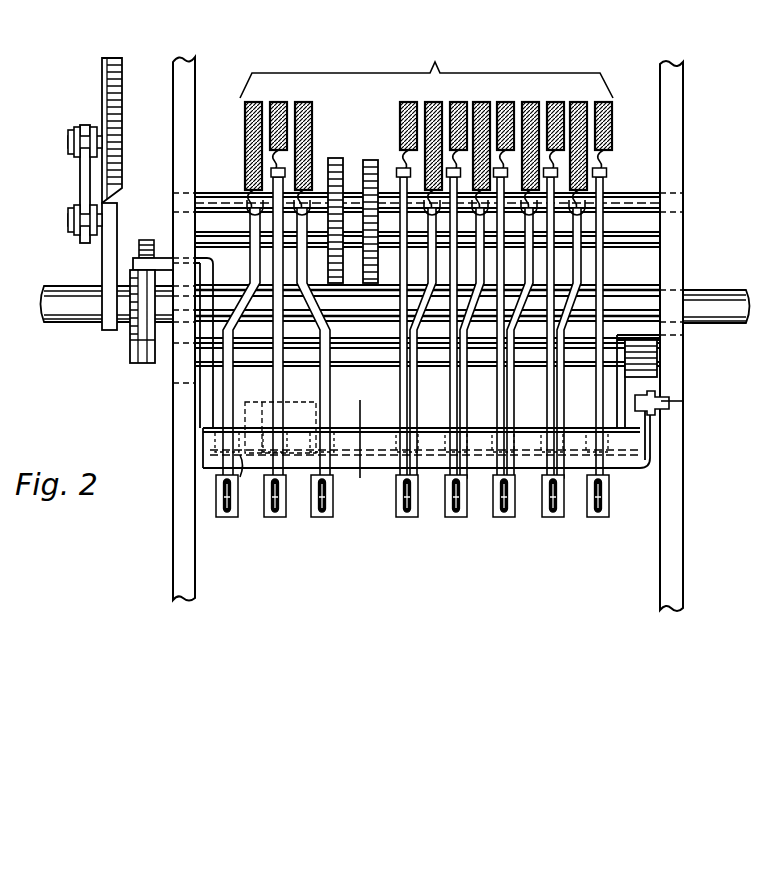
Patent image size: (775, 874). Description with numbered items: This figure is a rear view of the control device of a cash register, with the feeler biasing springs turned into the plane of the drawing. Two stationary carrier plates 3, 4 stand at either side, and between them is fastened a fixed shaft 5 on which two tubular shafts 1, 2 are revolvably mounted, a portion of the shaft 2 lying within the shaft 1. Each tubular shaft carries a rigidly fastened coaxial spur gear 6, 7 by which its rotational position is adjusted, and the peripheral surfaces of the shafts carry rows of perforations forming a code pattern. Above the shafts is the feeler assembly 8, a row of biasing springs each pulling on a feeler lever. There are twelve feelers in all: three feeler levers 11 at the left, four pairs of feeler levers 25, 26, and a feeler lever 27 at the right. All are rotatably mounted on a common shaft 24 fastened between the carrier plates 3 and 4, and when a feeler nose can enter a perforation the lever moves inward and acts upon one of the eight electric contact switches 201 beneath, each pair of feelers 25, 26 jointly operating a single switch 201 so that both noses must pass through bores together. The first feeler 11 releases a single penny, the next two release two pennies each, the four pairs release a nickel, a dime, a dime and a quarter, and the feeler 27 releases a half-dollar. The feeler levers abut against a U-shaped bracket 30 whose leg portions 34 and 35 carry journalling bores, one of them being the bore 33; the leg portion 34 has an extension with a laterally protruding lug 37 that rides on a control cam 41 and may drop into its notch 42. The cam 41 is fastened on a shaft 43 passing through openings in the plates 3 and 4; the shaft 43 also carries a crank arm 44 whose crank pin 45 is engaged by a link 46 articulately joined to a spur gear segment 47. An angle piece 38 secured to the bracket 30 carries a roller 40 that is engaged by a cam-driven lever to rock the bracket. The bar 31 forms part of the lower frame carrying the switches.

The tubular shaft 1 is at (400, 190).
The tubular shaft 2 is at (317, 198).
The carrier plate 3 is at (200, 78).
The carrier plate 4 is at (680, 560).
The fixed shaft 5 is at (663, 212).
The spur gear 6 is at (373, 158).
The spur gear 7 is at (338, 158).
The feeler assembly 8 is at (442, 53).
The feeler lever 11 is at (342, 386).
The shaft 24 is at (660, 349).
The feeler lever 25 is at (418, 470).
The feeler lever 26 is at (568, 420).
The feeler lever 27 is at (600, 396).
The bracket 30 is at (387, 401).
The bar 31 is at (362, 451).
The journalling bore 33 is at (647, 378).
The leg portion 34 is at (200, 385).
The leg portion 35 is at (625, 420).
The lug 37 is at (165, 252).
The angle piece 38 is at (312, 452).
The roller 40 is at (255, 478).
The control cam 41 is at (135, 357).
The notch 42 is at (136, 243).
The shaft 43 is at (70, 322).
The crank arm 44 is at (100, 270).
The crank pin 45 is at (68, 222).
The link 46 is at (80, 178).
The spur gear segment 47 is at (103, 80).
The electric contact switch 201 is at (604, 508).